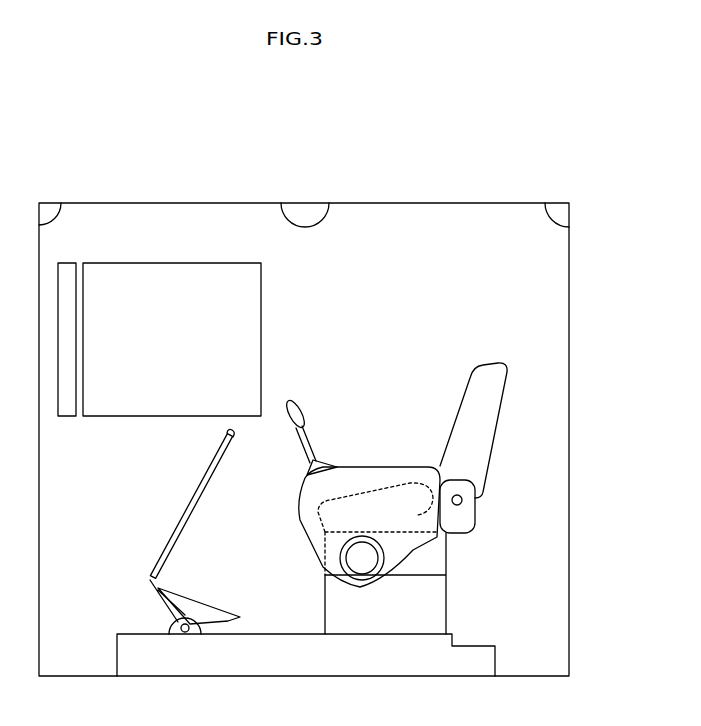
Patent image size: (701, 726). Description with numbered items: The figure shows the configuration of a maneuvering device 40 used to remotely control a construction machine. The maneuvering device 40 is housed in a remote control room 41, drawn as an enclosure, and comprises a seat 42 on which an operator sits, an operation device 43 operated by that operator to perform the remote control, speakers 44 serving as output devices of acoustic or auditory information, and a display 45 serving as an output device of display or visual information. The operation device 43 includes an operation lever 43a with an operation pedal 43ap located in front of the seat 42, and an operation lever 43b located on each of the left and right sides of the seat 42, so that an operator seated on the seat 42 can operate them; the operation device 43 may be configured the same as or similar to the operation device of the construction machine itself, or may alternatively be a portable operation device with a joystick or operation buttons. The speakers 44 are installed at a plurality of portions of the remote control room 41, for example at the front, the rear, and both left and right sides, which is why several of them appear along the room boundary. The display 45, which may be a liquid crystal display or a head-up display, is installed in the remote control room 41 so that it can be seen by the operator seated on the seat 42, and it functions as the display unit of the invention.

The maneuvering device 40 is at (400, 182).
The remote control room 41 is at (430, 203).
The seat 42 is at (470, 373).
The operation device 43 is at (322, 422).
The operation lever 43a is at (188, 502).
The operation pedal 43ap is at (207, 612).
The operation lever 43b is at (297, 398).
The speaker 44 is at (49, 212).
The display 45 is at (68, 263).